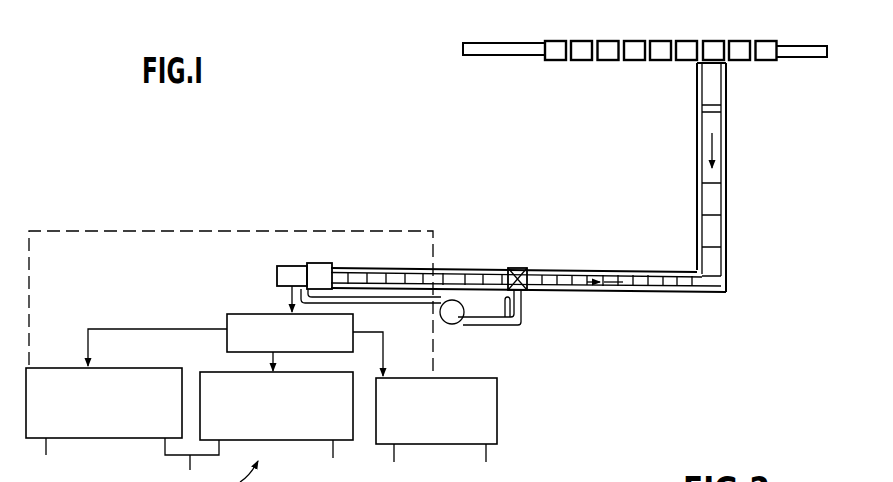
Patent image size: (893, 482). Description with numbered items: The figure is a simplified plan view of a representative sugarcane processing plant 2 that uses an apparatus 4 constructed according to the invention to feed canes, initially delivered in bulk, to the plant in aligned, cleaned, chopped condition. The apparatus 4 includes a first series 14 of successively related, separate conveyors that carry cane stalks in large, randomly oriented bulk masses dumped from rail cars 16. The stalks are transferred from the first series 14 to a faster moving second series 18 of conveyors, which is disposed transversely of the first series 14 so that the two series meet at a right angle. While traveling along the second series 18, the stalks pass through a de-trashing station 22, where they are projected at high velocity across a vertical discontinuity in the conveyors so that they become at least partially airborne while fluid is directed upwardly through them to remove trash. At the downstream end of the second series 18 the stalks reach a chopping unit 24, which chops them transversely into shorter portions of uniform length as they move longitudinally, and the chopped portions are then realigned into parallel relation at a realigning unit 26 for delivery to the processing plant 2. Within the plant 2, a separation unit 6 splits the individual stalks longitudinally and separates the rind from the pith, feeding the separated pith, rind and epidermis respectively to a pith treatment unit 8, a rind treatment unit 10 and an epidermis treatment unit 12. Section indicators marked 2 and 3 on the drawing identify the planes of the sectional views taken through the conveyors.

The sugarcane processing plant 2 is at (703, 35).
The section line 3- 3 is at (267, 266).
The apparatus 4 is at (598, 266).
The separation unit 6 is at (226, 318).
The pith treatment unit 8 is at (135, 440).
The rind treatment unit 10 is at (310, 442).
The epidermis treatment unit 12 is at (460, 445).
The first series of conveyor means 14 is at (729, 141).
The rail cars 16 is at (722, 44).
The second series of conveyors 18 is at (596, 292).
The de-trashing station 22 is at (524, 267).
The chopping unit 24 is at (322, 264).
The realigning unit 26 is at (296, 265).